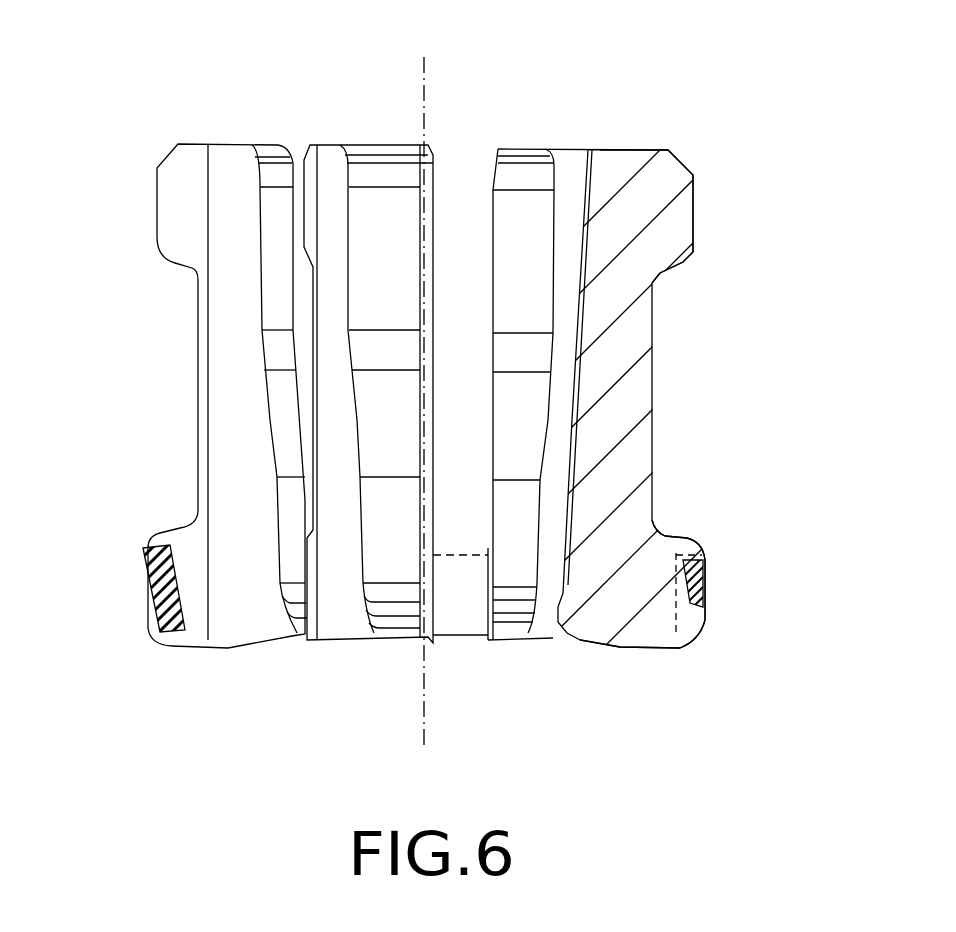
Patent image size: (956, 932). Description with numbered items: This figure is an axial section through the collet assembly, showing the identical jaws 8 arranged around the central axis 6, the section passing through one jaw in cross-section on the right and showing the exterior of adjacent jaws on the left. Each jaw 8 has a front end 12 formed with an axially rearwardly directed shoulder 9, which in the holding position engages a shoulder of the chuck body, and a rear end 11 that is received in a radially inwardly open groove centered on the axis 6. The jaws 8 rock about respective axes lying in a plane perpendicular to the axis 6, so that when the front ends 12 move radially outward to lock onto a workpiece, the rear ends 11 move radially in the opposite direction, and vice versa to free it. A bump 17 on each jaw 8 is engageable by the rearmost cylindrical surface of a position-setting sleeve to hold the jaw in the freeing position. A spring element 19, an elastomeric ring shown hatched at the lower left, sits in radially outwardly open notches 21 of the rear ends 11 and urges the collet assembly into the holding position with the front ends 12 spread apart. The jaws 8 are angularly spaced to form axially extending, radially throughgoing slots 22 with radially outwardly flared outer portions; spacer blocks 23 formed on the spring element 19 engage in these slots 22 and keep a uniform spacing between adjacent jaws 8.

The axis 6 is at (426, 84).
The jaw 8 is at (371, 132).
The shoulder 9 is at (683, 280).
The rear end 11 is at (645, 633).
The front end 12 is at (658, 200).
The bump 17 is at (292, 633).
The spring element 19 is at (150, 587).
The notch 21 is at (687, 607).
The slot 22 is at (467, 180).
The spacer block 23 is at (467, 597).